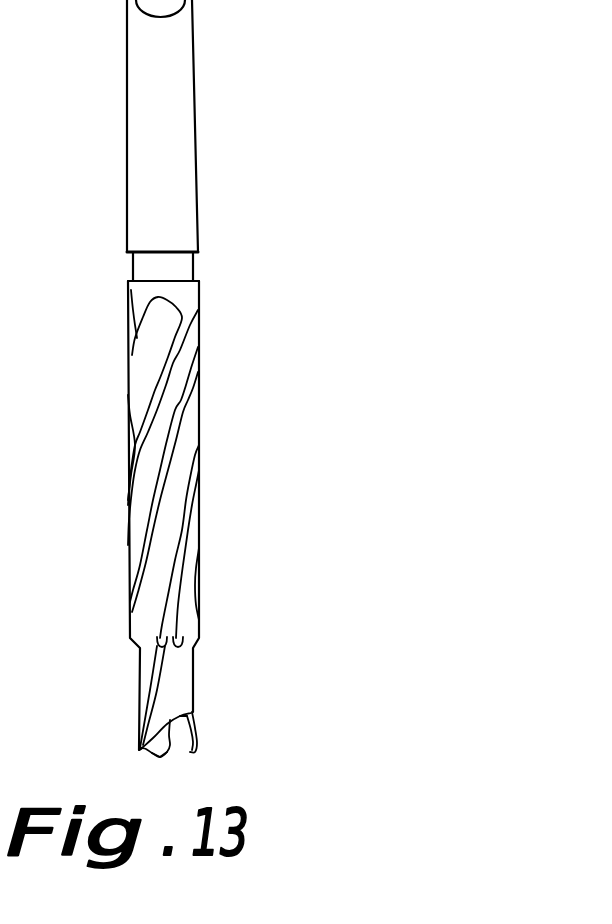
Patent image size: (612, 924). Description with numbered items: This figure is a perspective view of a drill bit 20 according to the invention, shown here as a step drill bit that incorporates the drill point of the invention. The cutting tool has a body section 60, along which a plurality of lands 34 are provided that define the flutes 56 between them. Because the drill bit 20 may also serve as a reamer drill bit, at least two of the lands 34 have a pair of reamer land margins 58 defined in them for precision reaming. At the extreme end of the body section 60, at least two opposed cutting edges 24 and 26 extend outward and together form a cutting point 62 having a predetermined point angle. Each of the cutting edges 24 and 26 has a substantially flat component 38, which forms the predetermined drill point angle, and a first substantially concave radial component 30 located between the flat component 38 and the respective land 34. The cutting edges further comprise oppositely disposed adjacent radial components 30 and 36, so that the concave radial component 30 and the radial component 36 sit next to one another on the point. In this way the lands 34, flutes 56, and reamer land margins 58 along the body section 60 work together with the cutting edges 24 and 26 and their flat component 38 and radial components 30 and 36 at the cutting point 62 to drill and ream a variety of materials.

The drill bit 20 is at (380, 181).
The cutting edge 24 is at (192, 713).
The cutting edge 26 is at (138, 753).
The first substantially concave radial component 30 is at (174, 760).
The lands 34 is at (130, 535).
The radial component 36 is at (200, 751).
The substantially flat component 38 is at (158, 766).
The flutes 56 is at (138, 387).
The reamer land margins 58 is at (202, 547).
The body section 60 is at (222, 396).
The cutting point 62 is at (210, 763).